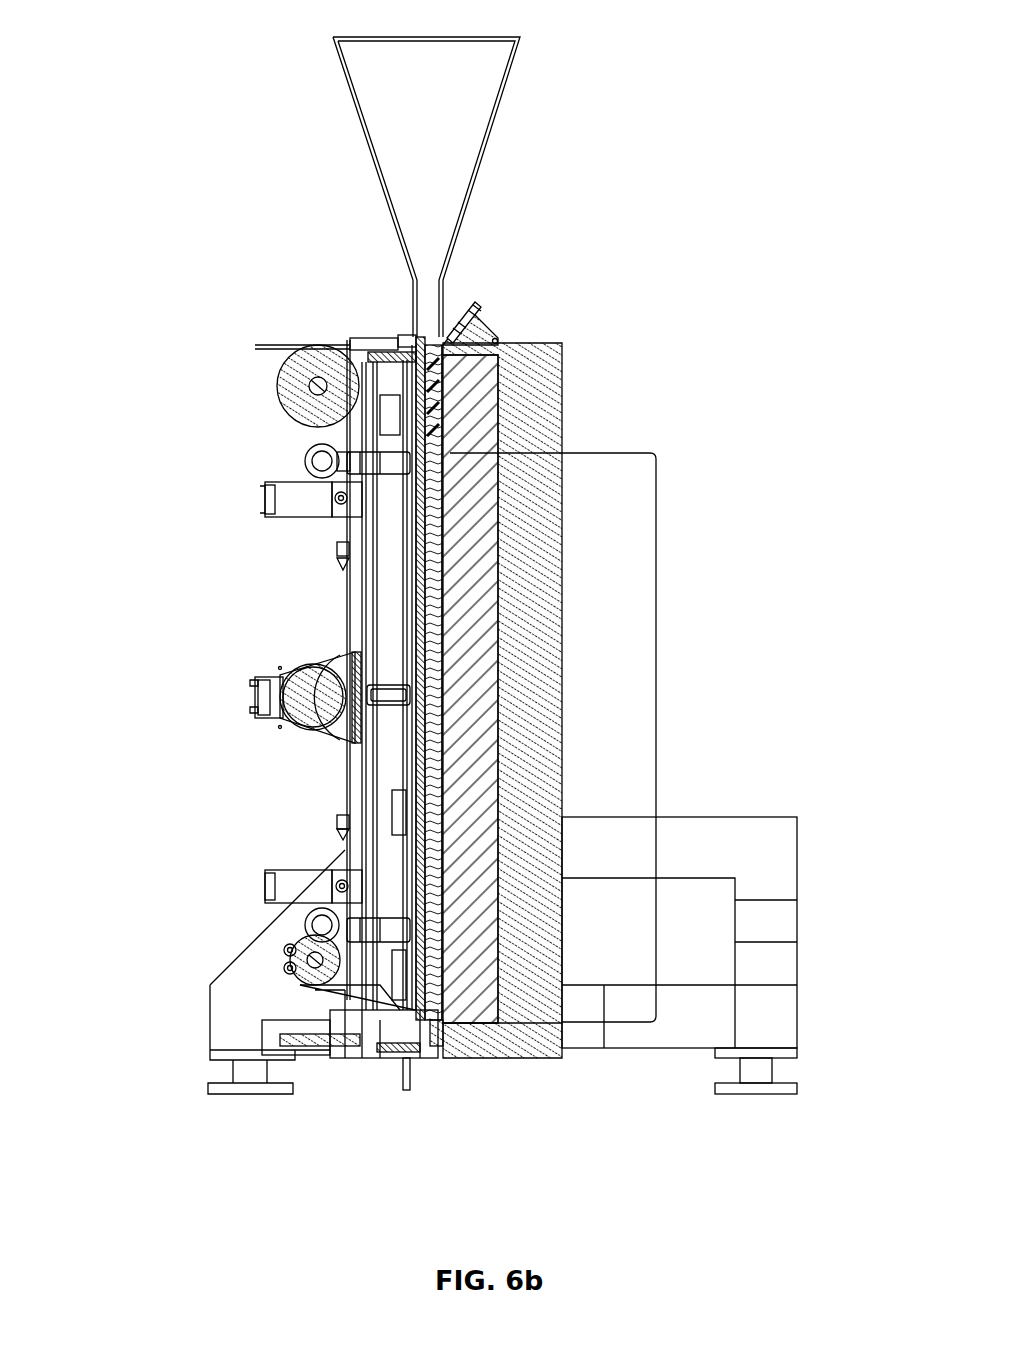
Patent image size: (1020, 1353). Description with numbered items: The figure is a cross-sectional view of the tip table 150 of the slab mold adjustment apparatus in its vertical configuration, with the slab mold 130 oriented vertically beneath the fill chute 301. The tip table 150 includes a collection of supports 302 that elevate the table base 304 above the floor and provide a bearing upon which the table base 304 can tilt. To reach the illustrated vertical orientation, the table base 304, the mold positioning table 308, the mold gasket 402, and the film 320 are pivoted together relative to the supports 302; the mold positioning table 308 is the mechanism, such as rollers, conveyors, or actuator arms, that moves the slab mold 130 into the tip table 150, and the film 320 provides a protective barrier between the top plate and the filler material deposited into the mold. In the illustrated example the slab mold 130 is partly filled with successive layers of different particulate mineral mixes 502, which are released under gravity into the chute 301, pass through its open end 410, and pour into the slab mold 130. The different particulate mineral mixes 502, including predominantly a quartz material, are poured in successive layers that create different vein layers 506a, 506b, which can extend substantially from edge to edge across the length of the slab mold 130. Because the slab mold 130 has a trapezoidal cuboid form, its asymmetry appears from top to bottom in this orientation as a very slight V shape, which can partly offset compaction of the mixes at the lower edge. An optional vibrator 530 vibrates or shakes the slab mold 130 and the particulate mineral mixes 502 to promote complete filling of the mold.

The tip table 150 is at (119, 425).
The fill chute 301 is at (316, 128).
The mold gasket 402 is at (415, 337).
The film 320 is at (400, 345).
The open end 410 is at (430, 328).
The table base 304 is at (563, 665).
The mold positioning table 308 is at (505, 705).
The vein layer 506a is at (443, 500).
The vein layer 506b is at (443, 540).
The different particulate mineral mixes 502 is at (656, 730).
The supports 302 is at (797, 866).
The vibrator 530 is at (258, 700).
The slab mold 130 is at (437, 1025).